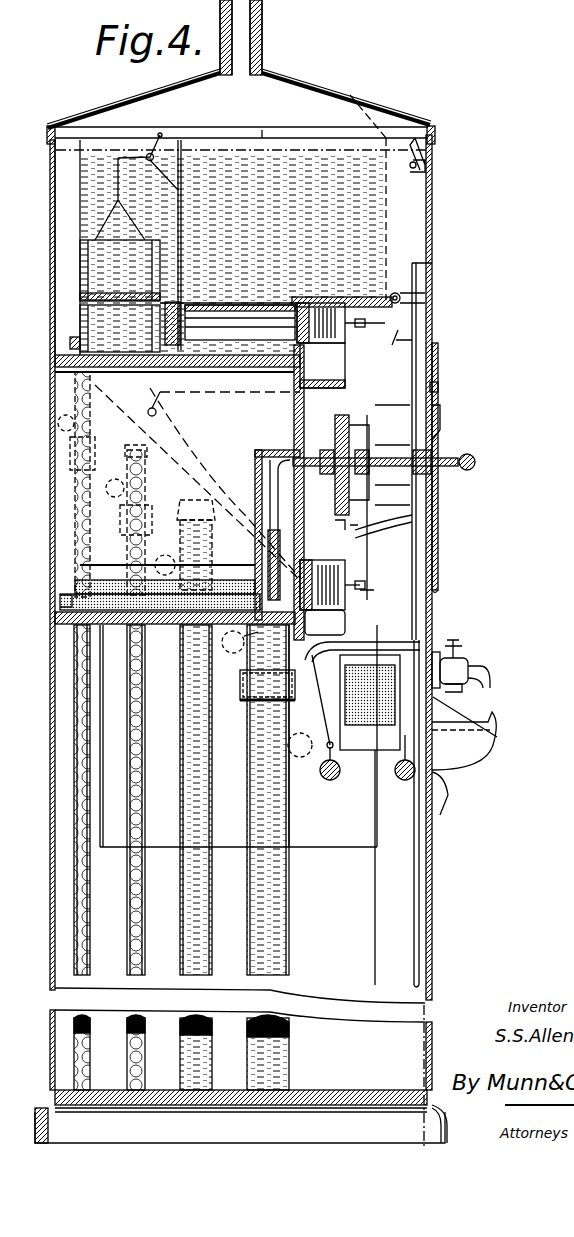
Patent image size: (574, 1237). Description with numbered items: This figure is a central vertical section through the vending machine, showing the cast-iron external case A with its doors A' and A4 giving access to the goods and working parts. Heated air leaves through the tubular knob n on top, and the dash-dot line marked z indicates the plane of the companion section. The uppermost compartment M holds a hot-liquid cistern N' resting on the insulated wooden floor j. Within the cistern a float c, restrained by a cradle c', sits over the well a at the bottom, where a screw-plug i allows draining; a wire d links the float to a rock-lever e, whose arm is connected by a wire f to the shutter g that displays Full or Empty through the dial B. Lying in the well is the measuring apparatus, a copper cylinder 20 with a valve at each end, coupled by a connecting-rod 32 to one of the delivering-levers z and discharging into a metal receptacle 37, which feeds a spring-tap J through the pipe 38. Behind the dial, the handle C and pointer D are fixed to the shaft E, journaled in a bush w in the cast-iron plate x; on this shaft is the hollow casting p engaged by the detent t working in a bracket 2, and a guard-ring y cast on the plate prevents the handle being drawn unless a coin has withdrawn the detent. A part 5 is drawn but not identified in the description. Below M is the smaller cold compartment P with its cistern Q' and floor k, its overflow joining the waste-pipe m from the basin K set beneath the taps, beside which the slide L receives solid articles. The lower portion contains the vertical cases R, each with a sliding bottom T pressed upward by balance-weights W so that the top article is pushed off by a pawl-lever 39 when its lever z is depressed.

The tubular knob n is at (241, 37).
The delivering-lever z is at (391, 620).
The wire f is at (422, 190).
The rock-lever e is at (138, 155).
The wire d is at (116, 160).
The cistern N' is at (236, 245).
The uppermost compartment M is at (245, 390).
The door A4 is at (50, 306).
The float c is at (120, 270).
The cradle c' is at (120, 328).
The screw-plug i is at (69, 468).
The well a is at (173, 245).
The cylinder 20 is at (230, 321).
The connecting-rod 32 is at (385, 310).
The metal receptacle 37 is at (331, 469).
The cast-iron plate x is at (412, 602).
The guard-ring y is at (388, 482).
The circular hollow casting p is at (348, 465).
The handle C is at (390, 462).
The shaft E is at (440, 452).
The pointer D is at (440, 413).
The bush w is at (440, 435).
The shutter g is at (438, 387).
The dial B is at (438, 532).
The bracket 2 is at (387, 530).
The rod 5 is at (368, 596).
The pawl-lever 39 is at (304, 535).
The pipe 38 is at (389, 668).
The detent t is at (206, 567).
The cistern Q' is at (177, 476).
The smaller compartment P is at (156, 484).
The floor j is at (228, 378).
The floor k is at (104, 630).
The vertical case R is at (181, 800).
The balance-weight W is at (258, 665).
The waste-pipe m is at (412, 896).
The spring-tap J is at (462, 666).
The slide L is at (454, 713).
The basin K is at (464, 763).
The external case A is at (221, 615).
The door A' is at (440, 612).
The sliding bottom T is at (90, 1077).